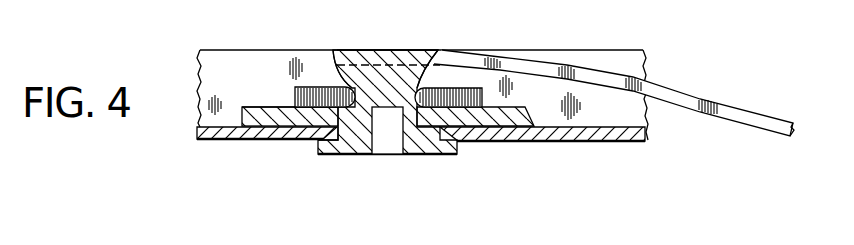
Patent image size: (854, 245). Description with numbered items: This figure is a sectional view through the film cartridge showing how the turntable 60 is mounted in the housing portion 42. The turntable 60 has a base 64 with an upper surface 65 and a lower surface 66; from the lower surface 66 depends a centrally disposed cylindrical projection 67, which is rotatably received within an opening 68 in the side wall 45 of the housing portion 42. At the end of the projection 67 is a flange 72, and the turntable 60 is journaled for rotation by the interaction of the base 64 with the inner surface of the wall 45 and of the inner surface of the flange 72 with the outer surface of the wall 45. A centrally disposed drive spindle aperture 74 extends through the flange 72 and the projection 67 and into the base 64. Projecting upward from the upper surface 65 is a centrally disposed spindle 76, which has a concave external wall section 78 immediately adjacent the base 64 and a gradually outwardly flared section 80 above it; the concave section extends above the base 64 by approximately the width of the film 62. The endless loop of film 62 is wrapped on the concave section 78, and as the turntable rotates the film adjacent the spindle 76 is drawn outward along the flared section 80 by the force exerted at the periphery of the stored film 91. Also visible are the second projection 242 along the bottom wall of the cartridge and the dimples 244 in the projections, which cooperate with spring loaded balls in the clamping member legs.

The turntable 60 is at (275, 67).
The housing portion 42 is at (608, 58).
The film 62 is at (722, 108).
The base 64 is at (240, 107).
The upper surface 65 is at (283, 104).
The lower surface 66 is at (213, 139).
The cylindrical projection 67 is at (318, 140).
The opening 68 is at (443, 133).
The side wall 45 is at (614, 134).
The flange 72 is at (438, 156).
The drive spindle aperture 74 is at (389, 142).
The spindle 76 is at (422, 63).
The concave external wall section 78 is at (350, 88).
The outwardly flared section 80 is at (447, 55).
The stored film 91 is at (295, 96).
The second projection 242 is at (555, 5).
The dimples 244 is at (400, 5).